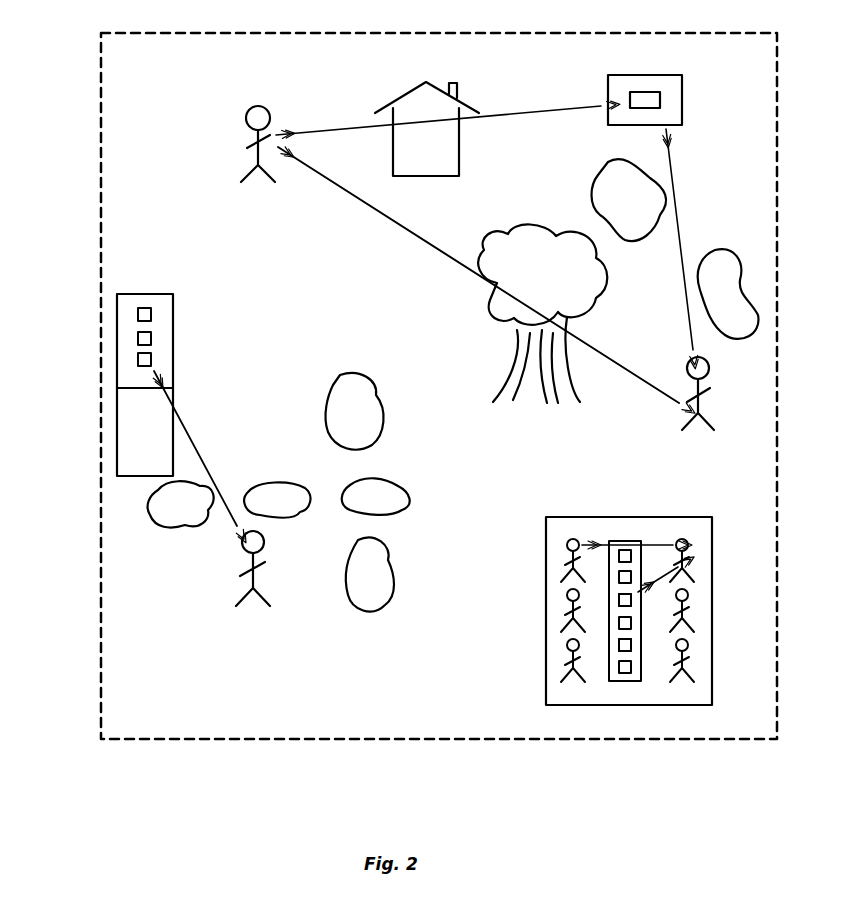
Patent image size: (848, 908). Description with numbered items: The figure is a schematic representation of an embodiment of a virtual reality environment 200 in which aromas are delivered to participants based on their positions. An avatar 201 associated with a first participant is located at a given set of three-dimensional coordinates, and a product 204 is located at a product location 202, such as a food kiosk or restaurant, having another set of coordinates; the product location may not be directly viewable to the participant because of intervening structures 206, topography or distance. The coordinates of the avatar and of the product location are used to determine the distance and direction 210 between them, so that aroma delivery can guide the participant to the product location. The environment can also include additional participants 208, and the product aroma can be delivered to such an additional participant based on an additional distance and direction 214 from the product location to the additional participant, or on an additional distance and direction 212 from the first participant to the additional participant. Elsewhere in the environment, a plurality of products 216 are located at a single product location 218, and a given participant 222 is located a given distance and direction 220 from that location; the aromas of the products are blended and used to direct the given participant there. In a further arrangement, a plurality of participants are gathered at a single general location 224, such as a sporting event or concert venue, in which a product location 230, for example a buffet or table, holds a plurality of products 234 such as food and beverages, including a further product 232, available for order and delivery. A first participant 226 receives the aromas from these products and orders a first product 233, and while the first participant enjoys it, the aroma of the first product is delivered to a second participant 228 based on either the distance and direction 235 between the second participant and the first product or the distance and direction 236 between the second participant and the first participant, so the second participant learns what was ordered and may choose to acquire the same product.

The virtual reality environment 200 is at (100, 96).
The avatar 201 is at (245, 121).
The autonomous mobile machine / device 202 is at (612, 76).
The product 204 is at (660, 100).
The intervening structures 206 is at (408, 91).
The additional participants 208 is at (710, 365).
The distance and direction 210 is at (518, 120).
The additional distance and additional direction 212 is at (411, 242).
The additional distance and additional direction 214 is at (673, 168).
The plurality of products 216 is at (137, 312).
The single product location 218 is at (149, 293).
The given distance and direction 220 is at (190, 428).
The given participant 222 is at (243, 556).
The single general location 224 is at (546, 517).
The first participant 226 is at (565, 553).
The second participant 228 is at (688, 557).
The product location 230 is at (626, 541).
The storage compartment 232 is at (624, 672).
The first product 233 is at (619, 603).
The plurality of products 234 is at (633, 647).
The distance and direction 235 is at (658, 584).
The distance and direction 236 is at (660, 545).